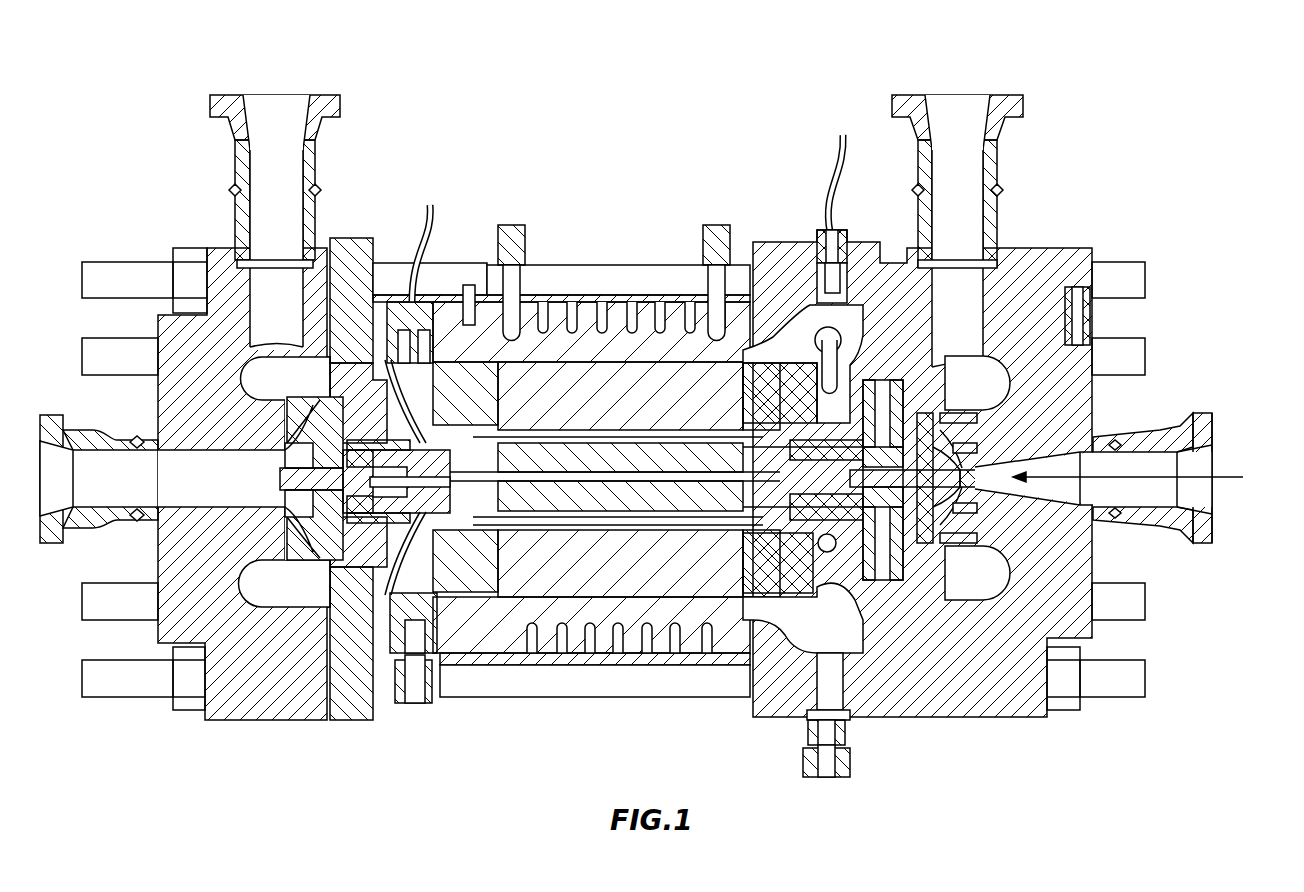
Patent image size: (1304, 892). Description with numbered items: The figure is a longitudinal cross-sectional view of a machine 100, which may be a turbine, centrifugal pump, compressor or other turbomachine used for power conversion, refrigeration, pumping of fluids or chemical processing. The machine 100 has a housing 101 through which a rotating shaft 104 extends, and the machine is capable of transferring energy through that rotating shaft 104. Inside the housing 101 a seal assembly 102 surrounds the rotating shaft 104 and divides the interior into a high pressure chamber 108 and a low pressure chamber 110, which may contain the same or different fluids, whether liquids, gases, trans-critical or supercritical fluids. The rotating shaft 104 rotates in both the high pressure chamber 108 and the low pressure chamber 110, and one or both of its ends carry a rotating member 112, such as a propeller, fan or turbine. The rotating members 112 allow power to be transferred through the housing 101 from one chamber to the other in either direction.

The machine 100 is at (661, 397).
The housing 101 is at (352, 237).
The seal assembly 102 is at (1007, 300).
The rotating shaft 104 is at (582, 483).
The high pressure chamber 108 is at (1157, 490).
The low pressure chamber 110 is at (603, 490).
The rotating member 112 is at (290, 497).